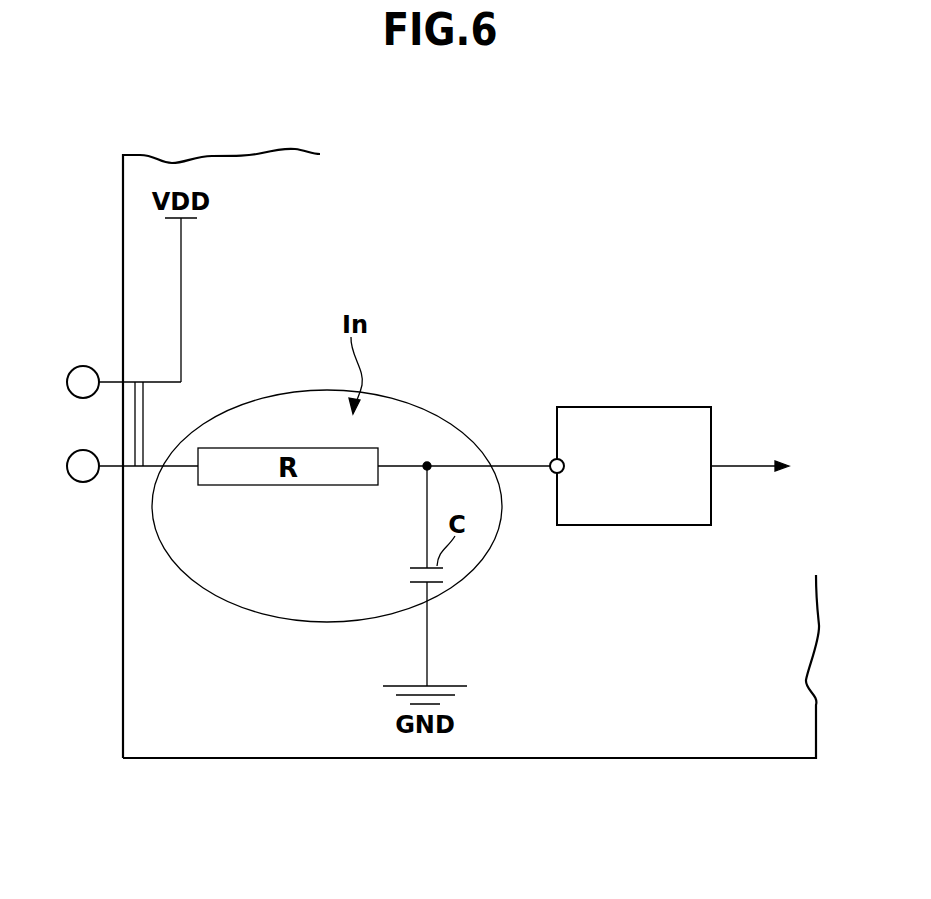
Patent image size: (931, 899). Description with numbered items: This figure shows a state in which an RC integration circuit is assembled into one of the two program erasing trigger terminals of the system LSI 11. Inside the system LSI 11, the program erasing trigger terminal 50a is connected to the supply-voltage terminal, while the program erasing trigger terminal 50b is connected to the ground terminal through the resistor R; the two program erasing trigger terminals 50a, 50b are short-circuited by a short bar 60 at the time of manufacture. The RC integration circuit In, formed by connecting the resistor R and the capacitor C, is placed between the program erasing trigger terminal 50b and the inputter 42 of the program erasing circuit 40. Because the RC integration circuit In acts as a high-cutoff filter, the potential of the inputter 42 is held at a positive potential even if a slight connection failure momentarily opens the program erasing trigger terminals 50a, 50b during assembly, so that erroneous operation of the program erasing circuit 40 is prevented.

The system LSI 11 is at (121, 220).
The program erasing trigger terminal 50a is at (83, 366).
The program erasing trigger terminal 50b is at (83, 482).
The short bar 60 is at (140, 426).
The program erasing circuit 40 is at (653, 407).
The inputter 42 is at (552, 475).